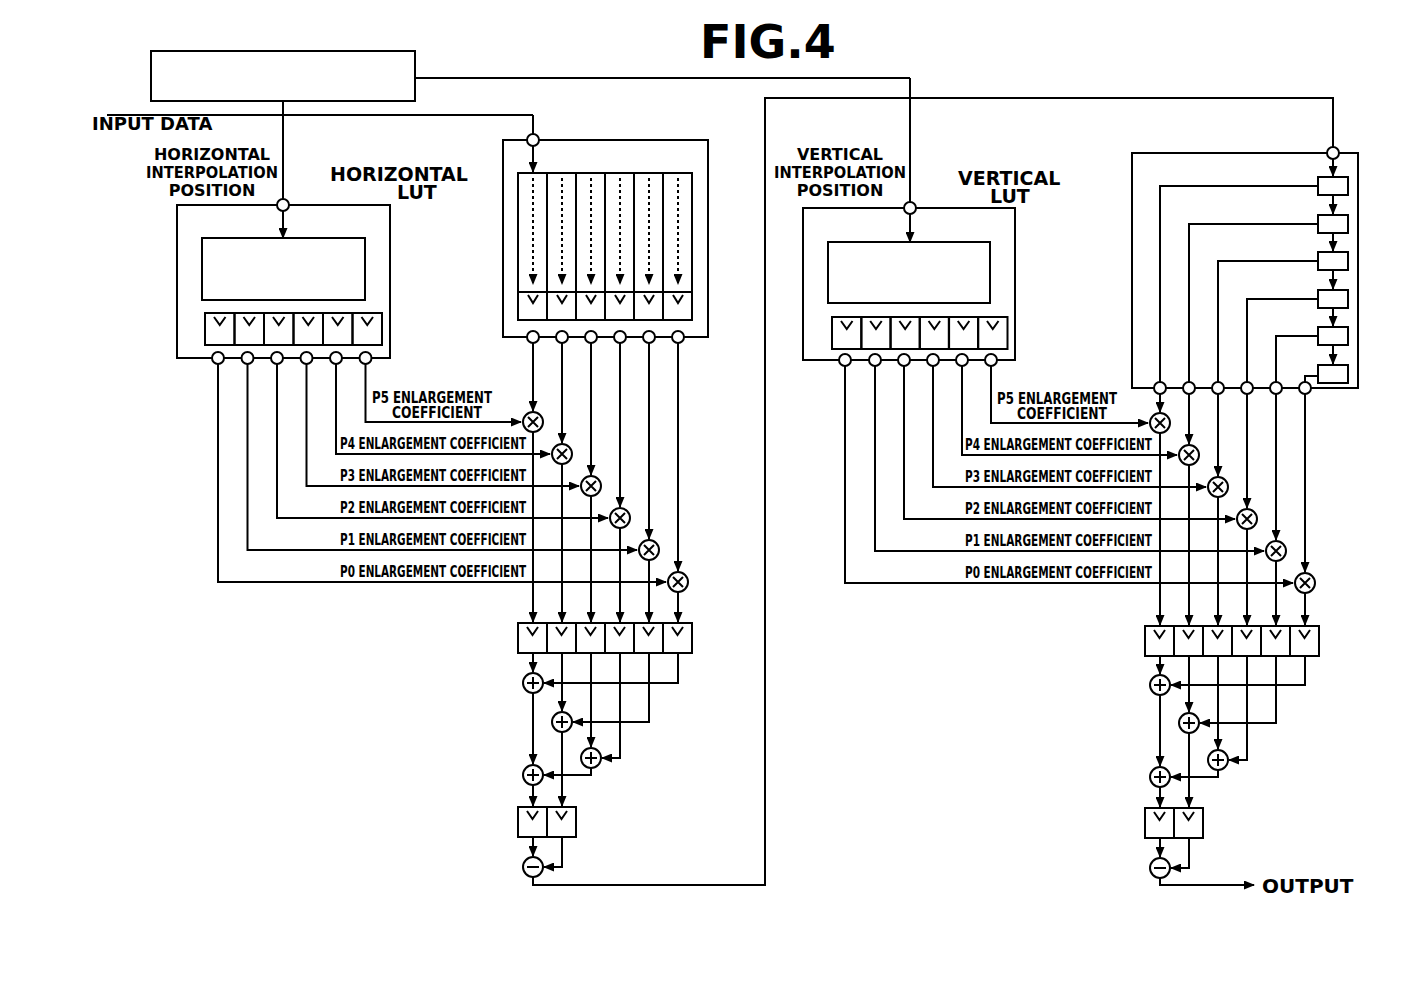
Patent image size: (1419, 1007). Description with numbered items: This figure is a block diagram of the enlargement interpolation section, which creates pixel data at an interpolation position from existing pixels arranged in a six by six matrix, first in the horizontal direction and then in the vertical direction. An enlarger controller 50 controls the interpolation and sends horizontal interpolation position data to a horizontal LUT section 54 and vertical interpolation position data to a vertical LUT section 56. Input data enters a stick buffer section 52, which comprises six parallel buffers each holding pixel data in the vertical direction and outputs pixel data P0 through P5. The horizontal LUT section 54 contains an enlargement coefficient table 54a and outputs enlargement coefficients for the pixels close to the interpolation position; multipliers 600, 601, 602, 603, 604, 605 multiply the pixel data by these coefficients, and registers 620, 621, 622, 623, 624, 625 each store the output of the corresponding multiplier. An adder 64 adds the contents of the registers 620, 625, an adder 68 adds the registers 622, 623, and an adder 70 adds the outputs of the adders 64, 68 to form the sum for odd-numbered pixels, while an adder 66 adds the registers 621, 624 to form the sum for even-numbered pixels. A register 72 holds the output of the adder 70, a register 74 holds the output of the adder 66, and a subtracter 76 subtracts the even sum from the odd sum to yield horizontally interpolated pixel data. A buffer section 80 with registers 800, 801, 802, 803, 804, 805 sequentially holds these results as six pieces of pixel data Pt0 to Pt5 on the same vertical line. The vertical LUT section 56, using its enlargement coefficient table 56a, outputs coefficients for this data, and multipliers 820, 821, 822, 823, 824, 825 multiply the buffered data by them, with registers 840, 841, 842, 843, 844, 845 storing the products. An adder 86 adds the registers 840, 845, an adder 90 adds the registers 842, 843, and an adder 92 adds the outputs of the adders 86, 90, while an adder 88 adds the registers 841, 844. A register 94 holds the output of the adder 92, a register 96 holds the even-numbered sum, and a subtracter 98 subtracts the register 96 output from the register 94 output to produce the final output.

The enlarger controller 50 is at (415, 84).
The stick buffer section 52 is at (559, 140).
The horizontal LUT section 54 is at (321, 262).
The enlargement coefficient table 54a is at (365, 272).
The vertical LUT section 56 is at (946, 265).
The enlargement coefficient table 56a is at (990, 273).
The buffer section 80 is at (1275, 252).
The register 800 is at (1348, 374).
The register 801 is at (1348, 336).
The register 802 is at (1348, 299).
The register 803 is at (1348, 261).
The register 804 is at (1348, 224).
The register 805 is at (1348, 186).
The multiplier 600 is at (688, 582).
The multiplier 601 is at (658, 545).
The multiplier 602 is at (629, 512).
The multiplier 603 is at (600, 480).
The multiplier 604 is at (571, 448).
The multiplier 605 is at (542, 416).
The register 620 is at (604, 674).
The register 621 is at (655, 654).
The register 622 is at (626, 654).
The register 623 is at (597, 654).
The register 624 is at (552, 622).
The register 625 is at (518, 640).
The adder 64 is at (523, 683).
The adder 66 is at (551, 722).
The adder 68 is at (598, 766).
The adder 70 is at (523, 775).
The register 72 is at (518, 822).
The register 74 is at (578, 822).
The subtracter 76 is at (522, 867).
The multiplier 820 is at (1315, 583).
The multiplier 821 is at (1285, 546).
The multiplier 822 is at (1256, 513).
The multiplier 823 is at (1227, 481).
The multiplier 824 is at (1198, 449).
The multiplier 825 is at (1169, 417).
The register 840 is at (1231, 675).
The register 841 is at (1281, 656).
The register 842 is at (1250, 656).
The register 843 is at (1222, 656).
The register 844 is at (1180, 624).
The register 845 is at (1145, 643).
The adder 86 is at (1150, 685).
The adder 88 is at (1178, 723).
The adder 90 is at (1225, 768).
The adder 92 is at (1150, 777).
The register 94 is at (1145, 823).
The register 96 is at (1205, 823).
The subtracter 98 is at (1149, 868).